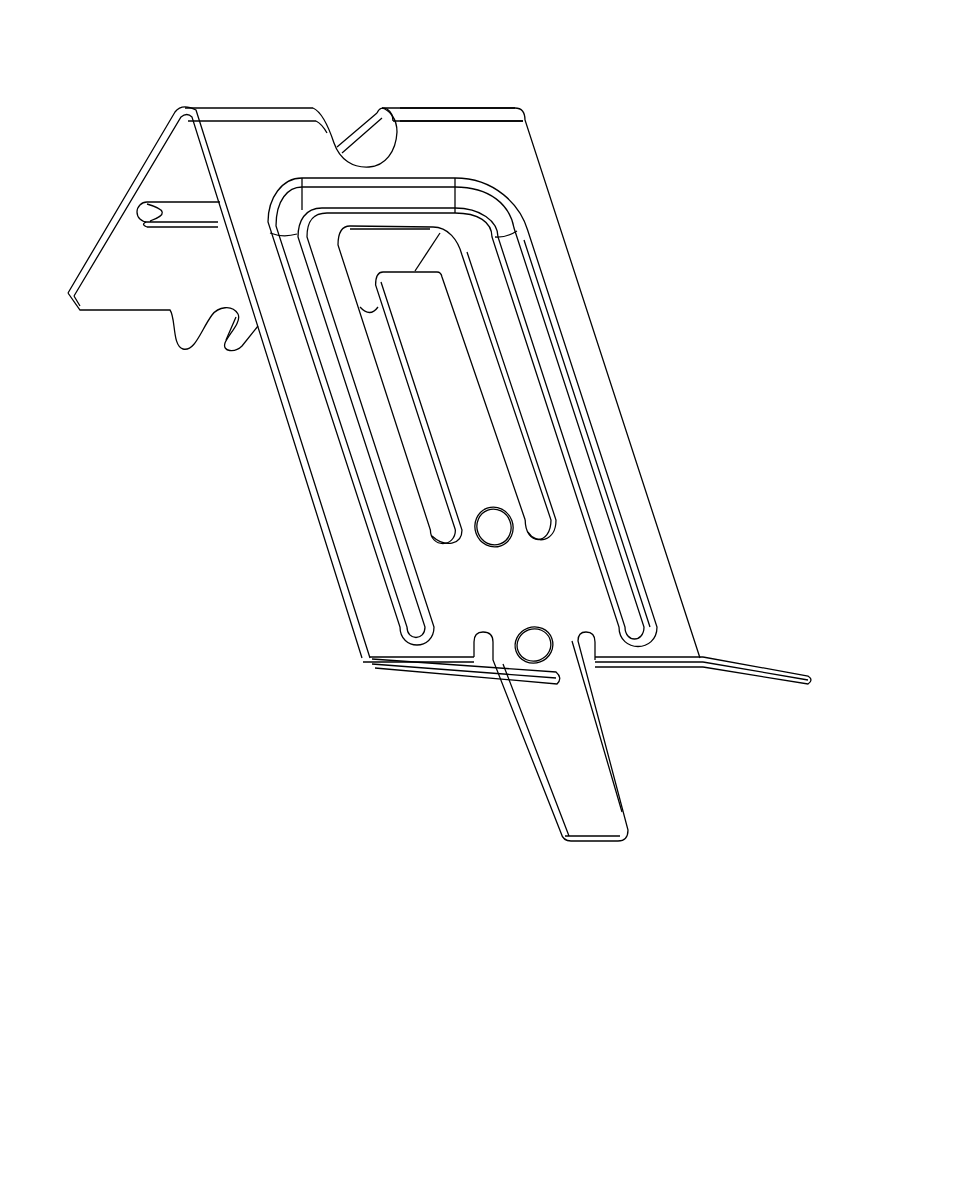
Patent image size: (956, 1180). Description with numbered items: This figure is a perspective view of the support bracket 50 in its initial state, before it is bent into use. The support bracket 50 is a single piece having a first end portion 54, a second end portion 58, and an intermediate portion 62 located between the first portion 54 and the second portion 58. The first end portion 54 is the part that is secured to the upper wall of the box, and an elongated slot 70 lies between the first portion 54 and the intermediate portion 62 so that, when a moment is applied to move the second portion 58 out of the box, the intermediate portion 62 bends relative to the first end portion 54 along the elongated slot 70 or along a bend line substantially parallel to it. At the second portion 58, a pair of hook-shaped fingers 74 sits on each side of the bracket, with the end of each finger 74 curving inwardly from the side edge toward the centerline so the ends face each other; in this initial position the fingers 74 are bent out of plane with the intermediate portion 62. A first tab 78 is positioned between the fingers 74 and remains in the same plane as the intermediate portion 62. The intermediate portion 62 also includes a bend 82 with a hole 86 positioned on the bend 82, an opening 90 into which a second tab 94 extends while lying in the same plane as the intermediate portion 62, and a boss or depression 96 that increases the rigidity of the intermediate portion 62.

The support bracket 50 is at (766, 138).
The first end portion 54 is at (126, 329).
The second end portion 58 is at (778, 823).
The intermediate portion 62 is at (665, 365).
The elongated slot 70 is at (152, 202).
The hook-shaped fingers 74 is at (482, 679).
The first tab 78 is at (604, 822).
The bend 82 is at (473, 120).
The hole 86 is at (333, 131).
The opening 90 is at (426, 483).
The second tab 94 is at (468, 453).
The boss or depression 96 is at (530, 303).